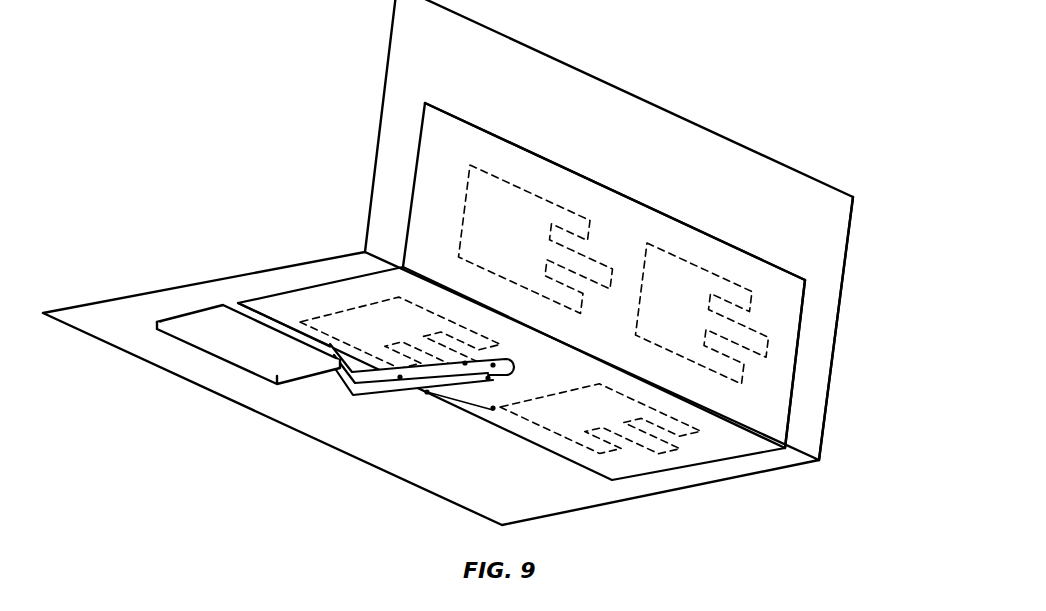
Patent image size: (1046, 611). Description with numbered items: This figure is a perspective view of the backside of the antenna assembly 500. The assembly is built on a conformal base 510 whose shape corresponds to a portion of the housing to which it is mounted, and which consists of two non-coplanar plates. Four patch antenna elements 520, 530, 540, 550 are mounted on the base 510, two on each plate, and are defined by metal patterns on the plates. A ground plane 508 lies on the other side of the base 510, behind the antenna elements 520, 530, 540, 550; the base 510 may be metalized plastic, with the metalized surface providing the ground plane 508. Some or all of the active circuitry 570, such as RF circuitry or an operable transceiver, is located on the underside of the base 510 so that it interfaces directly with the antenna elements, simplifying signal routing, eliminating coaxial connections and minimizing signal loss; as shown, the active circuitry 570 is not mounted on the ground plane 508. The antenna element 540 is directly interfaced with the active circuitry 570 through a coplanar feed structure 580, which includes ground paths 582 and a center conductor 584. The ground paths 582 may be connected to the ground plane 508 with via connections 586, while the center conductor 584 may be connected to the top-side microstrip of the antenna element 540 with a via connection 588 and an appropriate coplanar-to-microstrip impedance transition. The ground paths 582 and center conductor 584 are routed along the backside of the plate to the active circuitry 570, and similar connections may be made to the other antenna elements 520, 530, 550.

The antenna assembly 500 is at (326, 80).
The ground plane 508 is at (597, 182).
The base 510 is at (810, 173).
The antenna element 520 is at (673, 270).
The antenna element 530 is at (567, 427).
The antenna element 540 is at (355, 318).
The antenna element 550 is at (497, 196).
The active circuitry 570 is at (197, 305).
The coplanar feed structure 580 is at (325, 398).
The ground paths 582 is at (372, 380).
The center conductor 584 is at (310, 383).
The via connections 586 is at (493, 410).
The via connection 588 is at (500, 363).